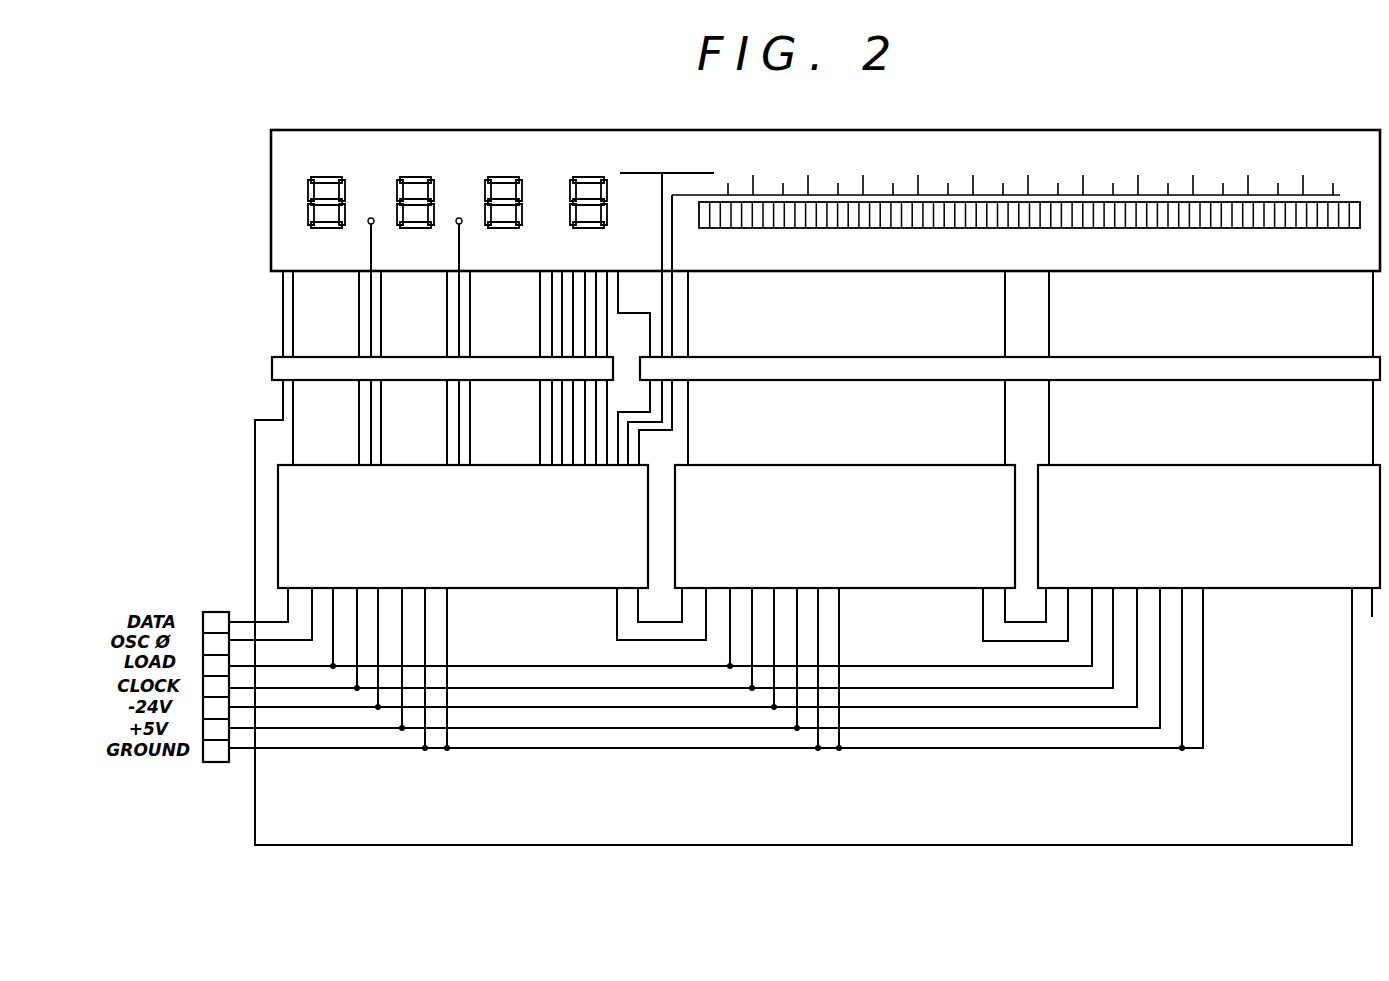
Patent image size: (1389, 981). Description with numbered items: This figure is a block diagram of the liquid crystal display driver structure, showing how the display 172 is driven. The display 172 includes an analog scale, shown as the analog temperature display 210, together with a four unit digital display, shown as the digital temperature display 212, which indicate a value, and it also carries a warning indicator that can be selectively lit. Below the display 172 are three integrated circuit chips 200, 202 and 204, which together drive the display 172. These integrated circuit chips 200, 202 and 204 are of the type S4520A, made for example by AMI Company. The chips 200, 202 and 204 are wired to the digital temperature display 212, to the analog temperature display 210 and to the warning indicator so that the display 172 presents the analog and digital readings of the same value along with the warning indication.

The display 172 is at (1052, 128).
The digital temperature display 212 is at (482, 166).
The analog temperature display 210 is at (994, 235).
The integrated circuit chip 200 is at (517, 588).
The integrated circuit chip 202 is at (893, 588).
The integrated circuit chip 204 is at (1258, 588).